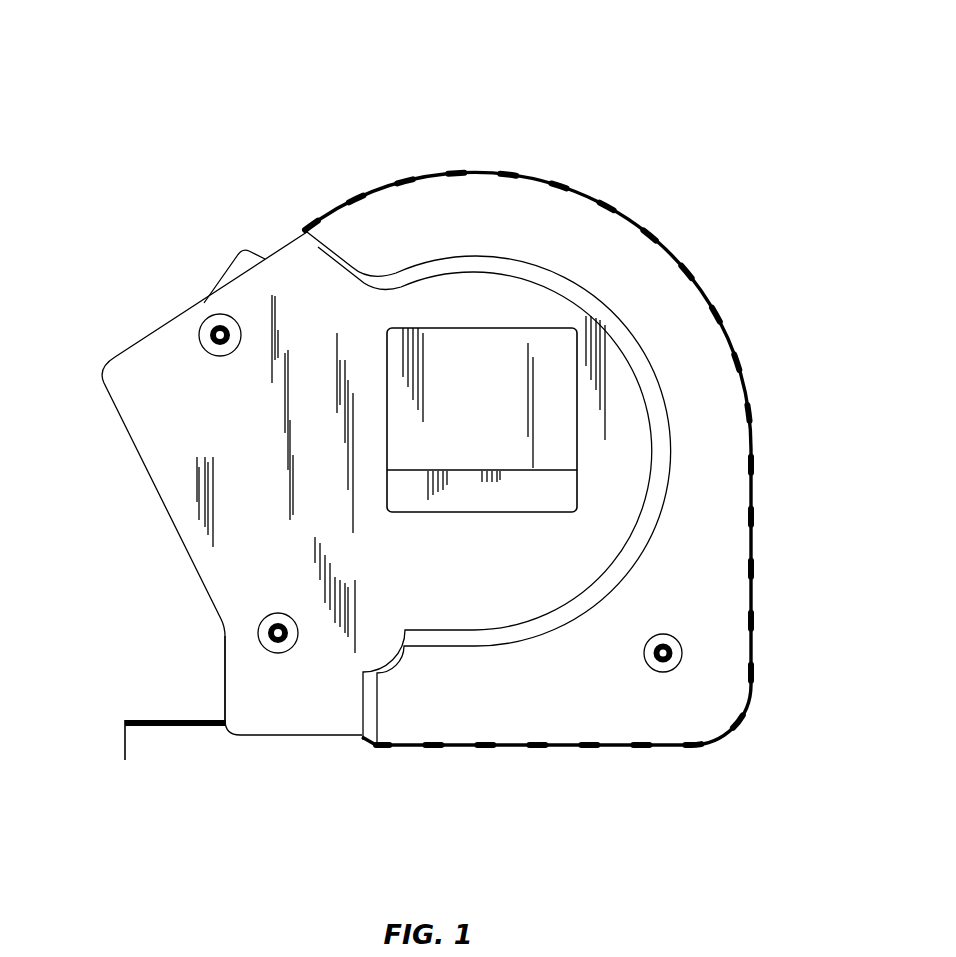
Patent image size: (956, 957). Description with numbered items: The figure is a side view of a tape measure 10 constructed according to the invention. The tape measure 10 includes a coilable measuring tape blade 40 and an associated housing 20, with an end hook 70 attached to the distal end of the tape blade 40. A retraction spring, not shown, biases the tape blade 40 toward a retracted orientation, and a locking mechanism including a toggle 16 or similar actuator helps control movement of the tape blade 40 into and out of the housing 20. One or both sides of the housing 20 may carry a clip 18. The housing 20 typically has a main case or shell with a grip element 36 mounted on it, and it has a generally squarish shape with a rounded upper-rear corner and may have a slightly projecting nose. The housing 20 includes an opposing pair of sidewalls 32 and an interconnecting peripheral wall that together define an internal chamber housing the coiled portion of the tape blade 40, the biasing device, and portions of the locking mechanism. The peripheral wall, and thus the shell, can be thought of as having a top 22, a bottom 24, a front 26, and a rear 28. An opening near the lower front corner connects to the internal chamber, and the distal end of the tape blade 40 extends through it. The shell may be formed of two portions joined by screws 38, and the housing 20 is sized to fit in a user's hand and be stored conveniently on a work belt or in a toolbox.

The tape measure 10 is at (289, 85).
The toggle 16 is at (235, 267).
The clip 18 is at (492, 353).
The housing 20 is at (143, 363).
The top 22 is at (287, 247).
The bottom 24 is at (298, 735).
The front 26 is at (224, 660).
The rear 28 is at (720, 449).
The sidewalls 32 is at (450, 602).
The grip element 36 is at (672, 303).
The screws 38 is at (288, 637).
The tape blade 40 is at (180, 727).
The end hook 70 is at (125, 740).